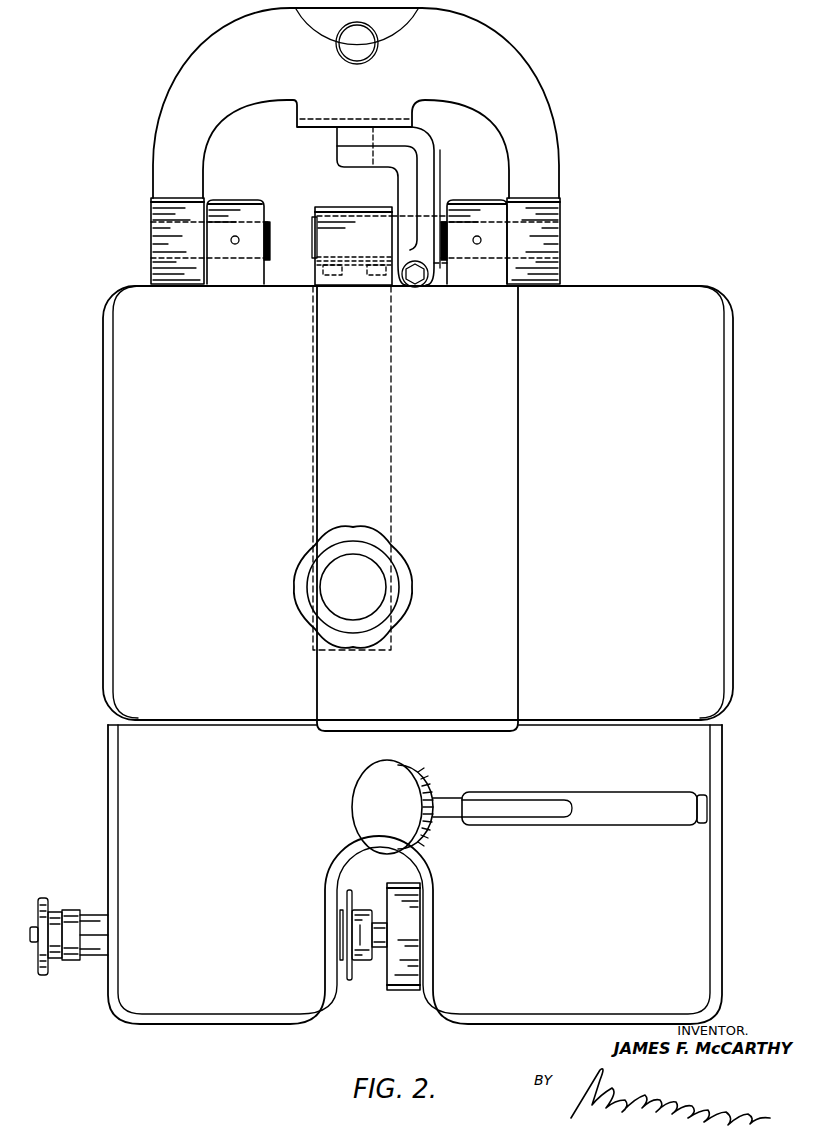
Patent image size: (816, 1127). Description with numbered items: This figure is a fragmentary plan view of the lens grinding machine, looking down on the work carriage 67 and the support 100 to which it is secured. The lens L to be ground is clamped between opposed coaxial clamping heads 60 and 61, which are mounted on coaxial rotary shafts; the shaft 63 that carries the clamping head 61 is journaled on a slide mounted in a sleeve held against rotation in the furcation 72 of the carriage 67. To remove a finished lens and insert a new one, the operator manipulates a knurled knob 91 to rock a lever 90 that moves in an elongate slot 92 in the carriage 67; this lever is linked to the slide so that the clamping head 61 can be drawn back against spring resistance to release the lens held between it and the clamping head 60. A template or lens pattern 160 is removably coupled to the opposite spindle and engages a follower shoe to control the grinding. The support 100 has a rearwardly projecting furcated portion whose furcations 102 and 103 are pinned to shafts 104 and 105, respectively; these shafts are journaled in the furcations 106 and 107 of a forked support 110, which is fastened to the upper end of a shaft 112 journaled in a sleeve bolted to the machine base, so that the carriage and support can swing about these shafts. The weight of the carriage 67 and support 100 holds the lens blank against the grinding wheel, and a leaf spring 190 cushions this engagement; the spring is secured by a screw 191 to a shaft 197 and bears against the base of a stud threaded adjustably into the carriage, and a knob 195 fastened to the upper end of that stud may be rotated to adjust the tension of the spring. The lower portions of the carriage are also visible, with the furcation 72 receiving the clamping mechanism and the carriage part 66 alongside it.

The support 100 is at (733, 580).
The forked support 110 is at (527, 98).
The shaft 112 is at (363, 54).
The furcation 102 is at (235, 210).
The furcation 103 is at (470, 210).
The shaft 104 is at (273, 233).
The shaft 105 is at (562, 214).
The furcation 106 is at (152, 272).
The furcation 107 is at (560, 272).
The leaf spring 190 is at (343, 207).
The screw 191 is at (333, 276).
The shaft 197 is at (312, 242).
The knob 195 is at (403, 580).
The knurled knob 91 is at (365, 790).
The lever 90 is at (492, 817).
The elongate slot 92 is at (630, 808).
The carriage 67 is at (705, 893).
The left base portion 66 is at (222, 1008).
The furcation 72 is at (503, 1012).
The clamping head 60 is at (352, 988).
The clamping head 61 is at (362, 913).
The rotary shaft 63 is at (380, 953).
The template 160 is at (42, 900).
The lens L is at (359, 995).